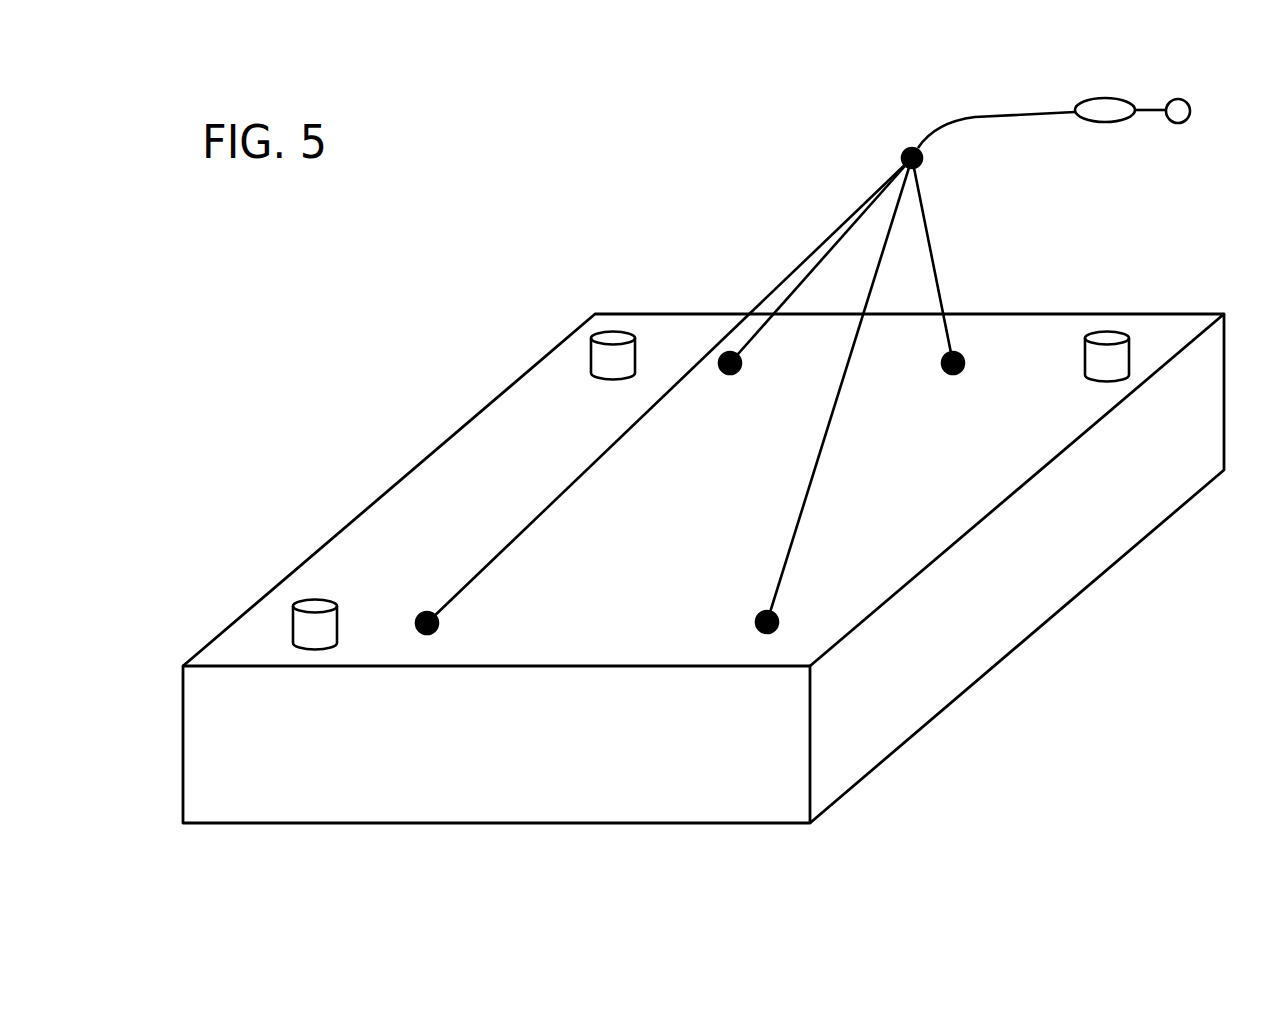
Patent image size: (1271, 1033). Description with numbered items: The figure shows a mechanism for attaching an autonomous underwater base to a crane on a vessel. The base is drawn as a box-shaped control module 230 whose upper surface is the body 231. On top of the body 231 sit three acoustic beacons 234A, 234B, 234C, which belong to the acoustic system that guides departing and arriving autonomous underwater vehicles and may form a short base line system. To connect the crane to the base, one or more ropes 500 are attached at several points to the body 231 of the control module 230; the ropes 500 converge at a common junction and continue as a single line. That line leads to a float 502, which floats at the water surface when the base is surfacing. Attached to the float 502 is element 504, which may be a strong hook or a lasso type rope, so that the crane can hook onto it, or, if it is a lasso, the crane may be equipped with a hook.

The control module 230 is at (712, 568).
The body 231 is at (868, 528).
The acoustic beacon 234A is at (315, 605).
The acoustic beacon 234B is at (617, 337).
The acoustic beacon 234C is at (1107, 337).
The ropes 500 is at (827, 436).
The float 502 is at (1113, 98).
The hook or lasso type rope 504 is at (1185, 102).